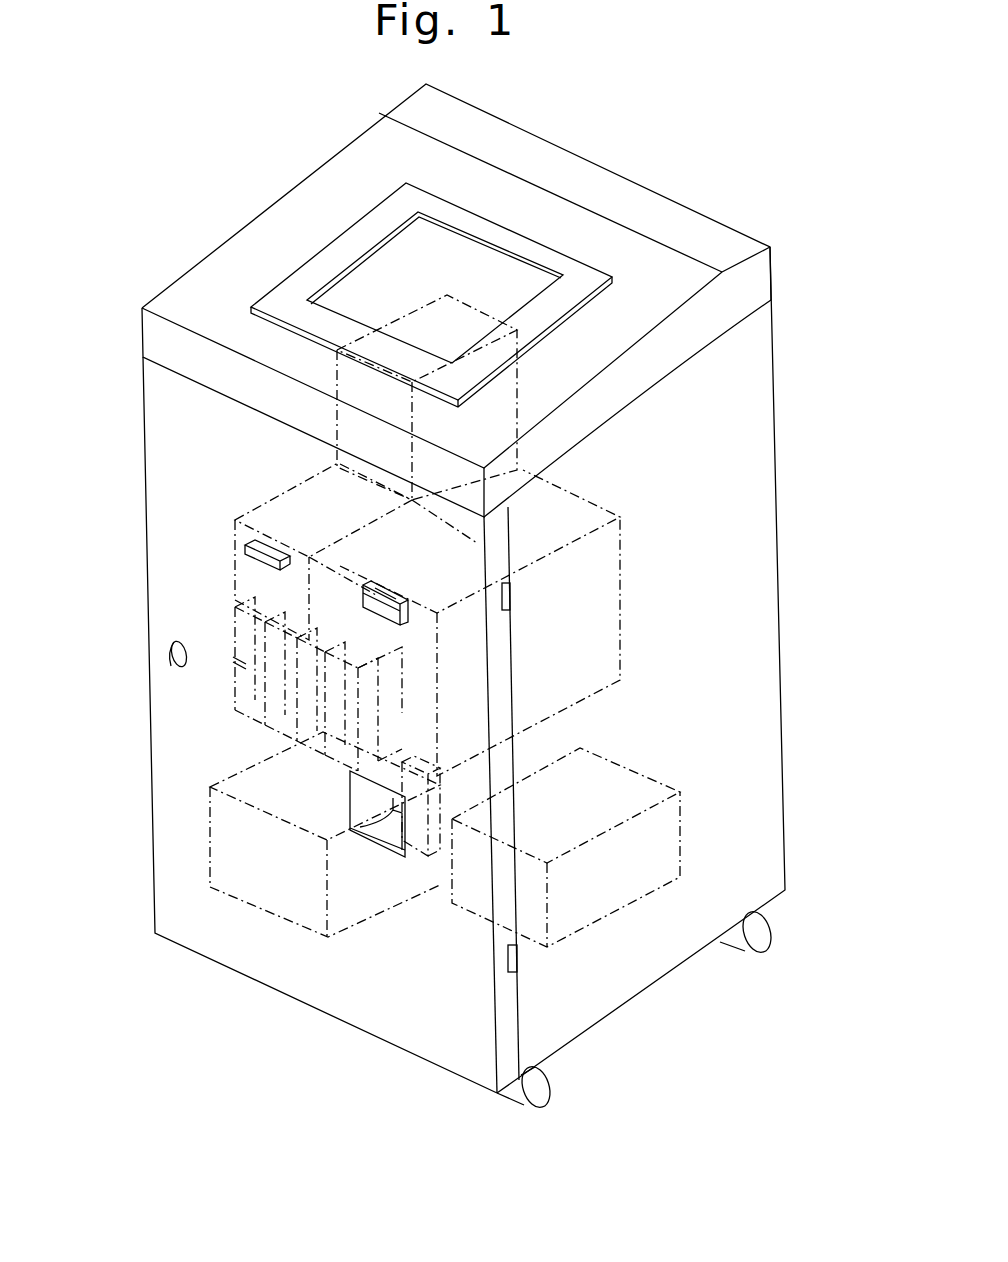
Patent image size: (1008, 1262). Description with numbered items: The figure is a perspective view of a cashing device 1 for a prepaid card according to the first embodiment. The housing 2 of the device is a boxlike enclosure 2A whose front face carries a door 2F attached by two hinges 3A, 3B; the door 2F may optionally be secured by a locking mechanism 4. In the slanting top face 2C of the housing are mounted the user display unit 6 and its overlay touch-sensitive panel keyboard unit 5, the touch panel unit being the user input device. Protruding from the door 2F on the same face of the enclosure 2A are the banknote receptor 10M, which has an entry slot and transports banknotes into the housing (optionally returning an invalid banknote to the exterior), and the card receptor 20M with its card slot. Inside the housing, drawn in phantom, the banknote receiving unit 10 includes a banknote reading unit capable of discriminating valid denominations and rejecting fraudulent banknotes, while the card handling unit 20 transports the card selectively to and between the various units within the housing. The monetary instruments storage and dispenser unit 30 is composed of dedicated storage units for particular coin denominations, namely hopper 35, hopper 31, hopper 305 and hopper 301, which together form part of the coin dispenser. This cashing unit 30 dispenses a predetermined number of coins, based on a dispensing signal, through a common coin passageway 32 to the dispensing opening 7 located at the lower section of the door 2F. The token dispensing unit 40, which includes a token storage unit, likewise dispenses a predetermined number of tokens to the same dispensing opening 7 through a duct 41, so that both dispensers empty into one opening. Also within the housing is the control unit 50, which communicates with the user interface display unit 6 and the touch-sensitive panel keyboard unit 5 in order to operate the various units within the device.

The component mounting apparatus 1 is at (612, 150).
The housing 2 is at (797, 486).
The boxlike enclosure 2A is at (775, 425).
The slanting top face 2C is at (238, 253).
The door 2F is at (153, 860).
The hinge 3A is at (510, 603).
The hinge 3B is at (518, 967).
The locking mechanism 4 is at (167, 653).
The touch-sensitive panel keyboard unit 5 is at (431, 289).
The user display unit 6 is at (375, 280).
The dispensing opening 7 is at (382, 835).
The banknote receiving unit 10 is at (627, 567).
The banknote receptor 10M is at (400, 630).
The card handling unit 20 is at (245, 513).
The card receptor 20M is at (243, 548).
The monetary instruments dispenser unit 30 is at (222, 603).
The hopper 31 is at (273, 727).
The common coin passageway 32 is at (237, 690).
The hopper 35 is at (237, 628).
The token dispensing unit 40 is at (652, 780).
The duct 41 is at (430, 847).
The control unit 50 is at (247, 900).
The hopper 301 is at (325, 753).
The hopper 305 is at (298, 737).